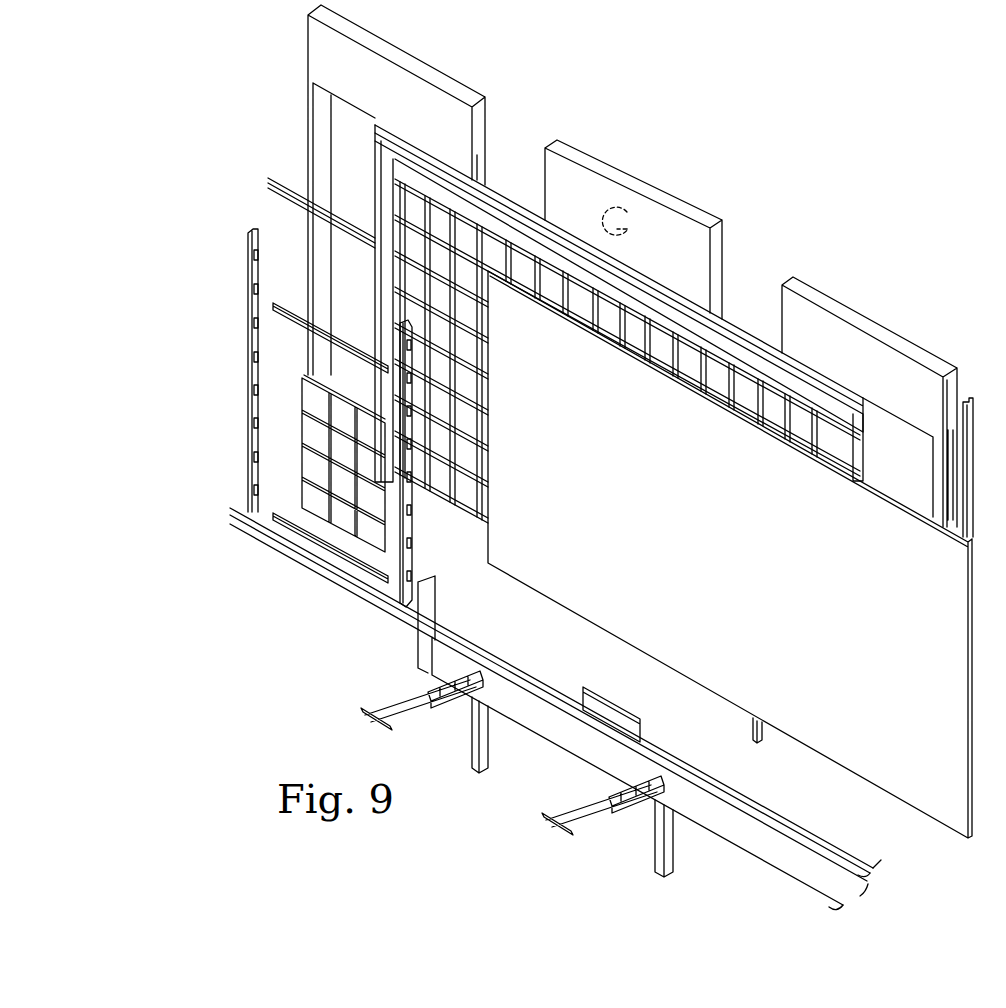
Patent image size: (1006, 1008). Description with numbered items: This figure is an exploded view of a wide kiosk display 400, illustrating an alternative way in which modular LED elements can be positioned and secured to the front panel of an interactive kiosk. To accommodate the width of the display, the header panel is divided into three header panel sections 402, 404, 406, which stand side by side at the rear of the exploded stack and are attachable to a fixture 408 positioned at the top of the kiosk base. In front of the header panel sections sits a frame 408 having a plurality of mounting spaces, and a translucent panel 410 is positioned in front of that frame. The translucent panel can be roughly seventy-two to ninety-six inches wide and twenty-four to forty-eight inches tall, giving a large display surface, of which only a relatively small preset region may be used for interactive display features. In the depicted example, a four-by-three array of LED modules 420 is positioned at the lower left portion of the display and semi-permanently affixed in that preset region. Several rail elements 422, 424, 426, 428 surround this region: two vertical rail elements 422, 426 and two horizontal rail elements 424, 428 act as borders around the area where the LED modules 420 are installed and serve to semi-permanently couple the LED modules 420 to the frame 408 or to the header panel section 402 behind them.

The wide kiosk display 400 is at (738, 113).
The header panel section 402 is at (398, 90).
The header panel section 404 is at (676, 256).
The header panel section 406 is at (885, 370).
The frame 408 is at (373, 183).
The translucent panel 410 is at (716, 560).
The LED modules 420 is at (302, 463).
The rail element 422 is at (248, 296).
The rail element 424 is at (323, 553).
The rail element 426 is at (395, 593).
The rail element 428 is at (302, 328).